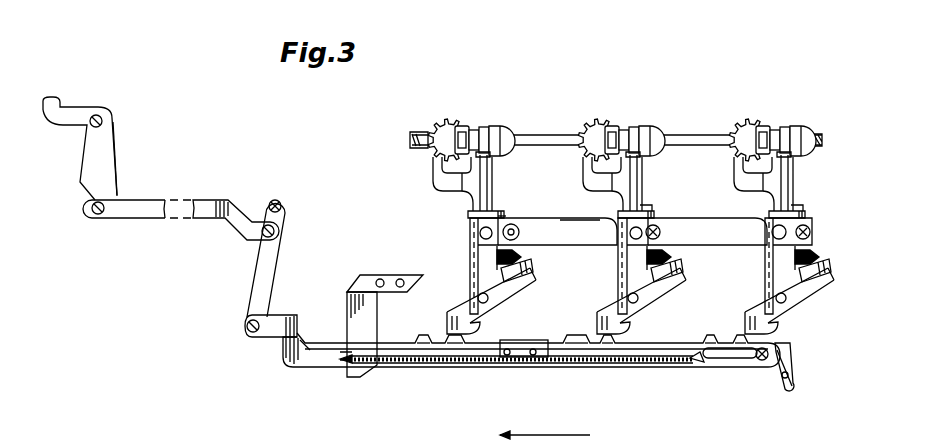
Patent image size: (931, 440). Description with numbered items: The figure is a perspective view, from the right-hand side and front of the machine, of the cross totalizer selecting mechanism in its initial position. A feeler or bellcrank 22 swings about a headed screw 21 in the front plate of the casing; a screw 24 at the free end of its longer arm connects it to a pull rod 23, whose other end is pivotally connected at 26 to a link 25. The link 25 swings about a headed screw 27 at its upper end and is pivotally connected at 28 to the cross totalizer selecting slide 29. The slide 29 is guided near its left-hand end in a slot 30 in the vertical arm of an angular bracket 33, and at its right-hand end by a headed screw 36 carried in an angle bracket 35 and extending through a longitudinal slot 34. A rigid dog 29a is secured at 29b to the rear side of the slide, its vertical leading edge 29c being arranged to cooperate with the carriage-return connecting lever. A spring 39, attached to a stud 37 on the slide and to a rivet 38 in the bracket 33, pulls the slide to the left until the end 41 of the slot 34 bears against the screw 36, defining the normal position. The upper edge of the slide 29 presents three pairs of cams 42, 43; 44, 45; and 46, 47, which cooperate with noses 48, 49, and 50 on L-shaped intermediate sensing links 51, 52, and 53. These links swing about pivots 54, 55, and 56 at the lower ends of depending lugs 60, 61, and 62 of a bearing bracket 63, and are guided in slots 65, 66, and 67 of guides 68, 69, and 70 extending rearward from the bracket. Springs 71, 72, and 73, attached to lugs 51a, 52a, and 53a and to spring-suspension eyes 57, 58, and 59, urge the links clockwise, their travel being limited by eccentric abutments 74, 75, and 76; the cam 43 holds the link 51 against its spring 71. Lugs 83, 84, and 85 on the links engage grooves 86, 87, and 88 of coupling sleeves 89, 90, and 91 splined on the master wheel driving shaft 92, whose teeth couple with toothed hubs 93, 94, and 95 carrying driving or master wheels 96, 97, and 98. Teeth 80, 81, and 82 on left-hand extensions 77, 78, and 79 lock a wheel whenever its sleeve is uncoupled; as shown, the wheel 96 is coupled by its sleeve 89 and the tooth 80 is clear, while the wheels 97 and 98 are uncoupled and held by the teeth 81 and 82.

The headed screw 21 is at (105, 123).
The feeler or bellcrank 22 is at (97, 152).
The pull rod 23 is at (200, 204).
The screw 24 is at (90, 214).
The link 25 is at (253, 272).
The pivotal connection 26 is at (281, 233).
The headed screw 27 is at (274, 200).
The pivotal connection 28 is at (250, 327).
The cross totalizer selecting slide 29 is at (303, 360).
The rigid dog 29a is at (530, 357).
The dog attachment point 29b is at (528, 343).
The vertical leading edge 29c is at (503, 357).
The slot 30 is at (360, 350).
The angular bracket 33 is at (345, 305).
The longitudinal slot 34 is at (724, 359).
The angle bracket 35 is at (780, 383).
The headed screw 36 is at (762, 361).
The stud 37 is at (700, 365).
The rivet 38 is at (357, 362).
The spring 39 is at (563, 367).
The end of slot 41 is at (780, 345).
The cam 42 is at (420, 347).
The cam 43 is at (460, 345).
The cam 44 is at (578, 340).
The cam 45 is at (610, 343).
The cam 46 is at (713, 340).
The cam 47 is at (740, 338).
The nose 48 is at (482, 328).
The nose 49 is at (631, 328).
The nose 50 is at (776, 329).
The intermediate sensing link 51 is at (482, 188).
The lug 51a is at (497, 251).
The intermediate sensing link 52 is at (640, 188).
The lug 52a is at (647, 253).
The intermediate sensing link 53 is at (776, 185).
The lug 53a is at (792, 254).
The pivot 54 is at (497, 293).
The pivot 55 is at (650, 295).
The pivot 56 is at (790, 294).
The spring-suspension eye 57 is at (533, 273).
The spring-suspension eye 58 is at (675, 278).
The spring-suspension eye 59 is at (797, 281).
The depending lug 60 is at (470, 272).
The depending lug 61 is at (618, 272).
The depending lug 62 is at (765, 271).
The bearing bracket 63 is at (577, 228).
The slot 65 is at (502, 214).
The slot 66 is at (645, 212).
The slot 67 is at (793, 209).
The guide 68 is at (475, 212).
The guide 69 is at (618, 213).
The guide 70 is at (772, 211).
The spring 71 is at (520, 263).
The spring 72 is at (670, 263).
The spring 73 is at (803, 258).
The eccentric abutment 74 is at (522, 232).
The eccentric abutment 75 is at (661, 232).
The eccentric abutment 76 is at (772, 232).
The left-hand extension 77 is at (497, 132).
The left-hand extension 78 is at (647, 132).
The left-hand extension 79 is at (800, 130).
The tooth 80 is at (435, 165).
The tooth 81 is at (588, 172).
The tooth 82 is at (740, 172).
The lug 83 is at (490, 157).
The lug 84 is at (640, 157).
The lug 85 is at (790, 158).
The groove 86 is at (483, 127).
The groove 87 is at (634, 127).
The groove 88 is at (784, 127).
The coupling sleeve 89 is at (472, 129).
The coupling sleeve 90 is at (622, 128).
The coupling sleeve 91 is at (774, 128).
The master wheel driving shaft 92 is at (550, 135).
The hub 93 is at (457, 125).
The hub 94 is at (607, 125).
The hub 95 is at (758, 125).
The driving or master wheel 96 is at (443, 118).
The driving or master wheel 97 is at (594, 114).
The driving or master wheel 98 is at (742, 117).